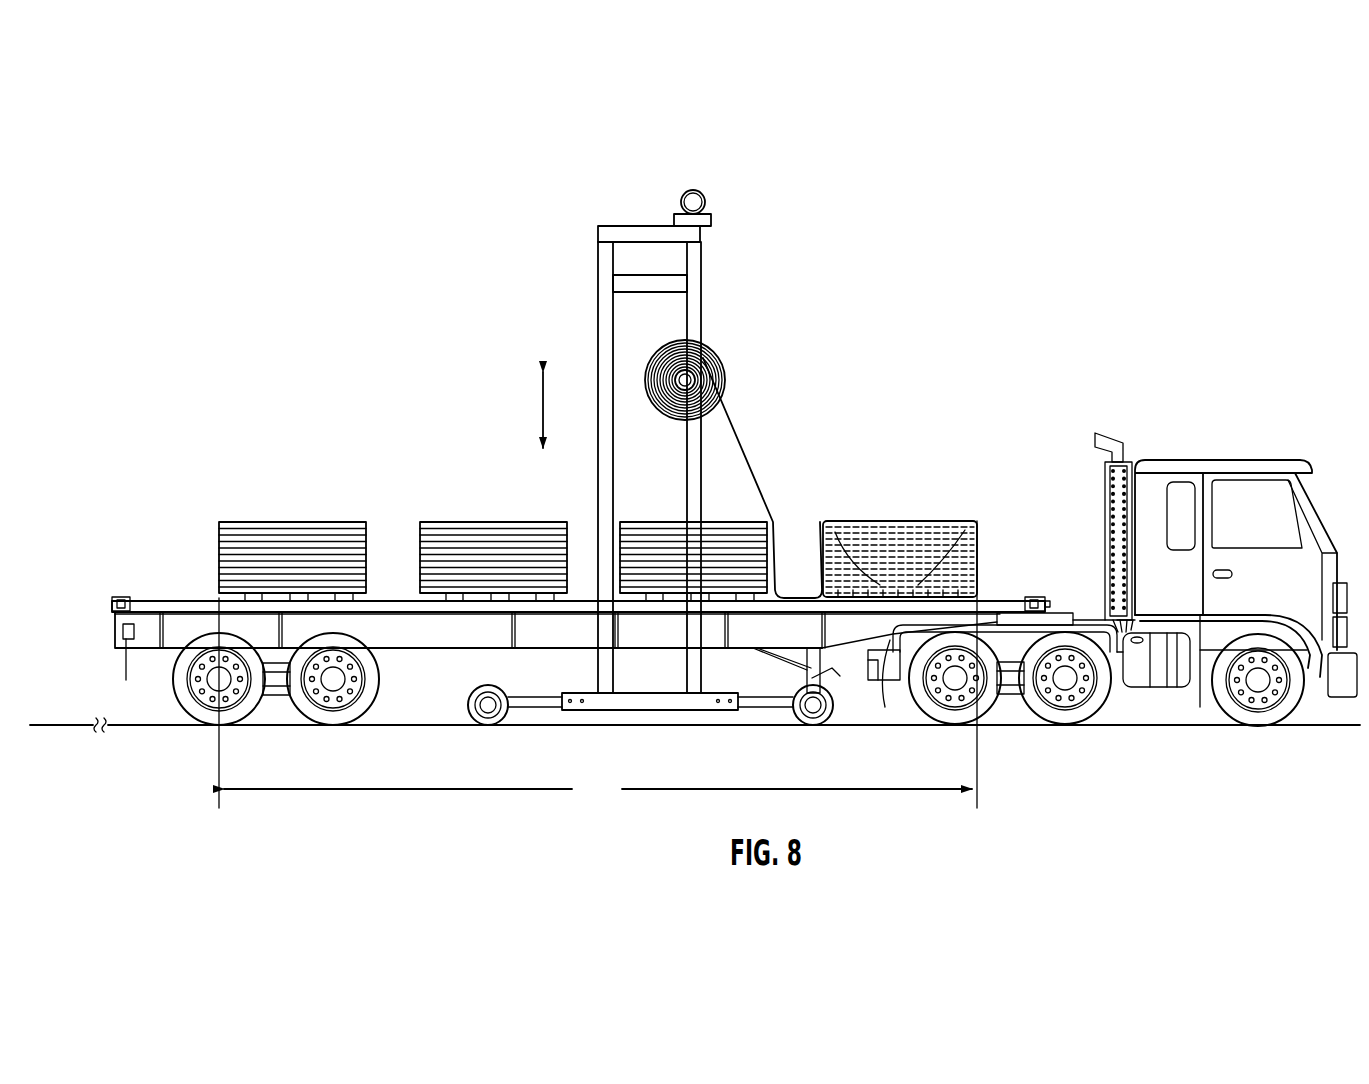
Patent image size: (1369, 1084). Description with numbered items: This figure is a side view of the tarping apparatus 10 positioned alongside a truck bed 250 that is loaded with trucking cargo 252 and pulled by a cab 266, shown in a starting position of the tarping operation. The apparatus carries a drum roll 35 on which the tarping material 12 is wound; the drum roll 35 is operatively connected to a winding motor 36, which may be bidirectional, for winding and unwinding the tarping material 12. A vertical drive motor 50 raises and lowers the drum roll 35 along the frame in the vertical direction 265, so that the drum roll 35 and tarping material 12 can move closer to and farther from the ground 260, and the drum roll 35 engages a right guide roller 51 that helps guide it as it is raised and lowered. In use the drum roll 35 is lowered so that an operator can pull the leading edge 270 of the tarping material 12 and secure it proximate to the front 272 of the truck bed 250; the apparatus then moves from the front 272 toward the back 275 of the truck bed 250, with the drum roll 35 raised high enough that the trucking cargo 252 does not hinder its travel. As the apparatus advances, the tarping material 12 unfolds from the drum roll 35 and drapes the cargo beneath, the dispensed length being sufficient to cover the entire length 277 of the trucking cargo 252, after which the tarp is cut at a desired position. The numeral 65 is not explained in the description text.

The tarping apparatus 10 is at (618, 190).
The tarping material 12 is at (747, 455).
The drum roll 35 is at (647, 402).
The winding motor 36 is at (672, 380).
The vertical drive motor 50 is at (687, 192).
The right guide roller 51 is at (676, 372).
The mast frame 65 is at (703, 325).
The truck bed 250 is at (175, 599).
The trucking cargo 252 is at (299, 521).
The ground 260 is at (62, 722).
The vertical direction 265 is at (538, 407).
The cab 266 is at (1223, 460).
The leading edge 270 is at (975, 602).
The front 272 is at (1045, 600).
The back 275 is at (110, 605).
The length 277 is at (595, 703).